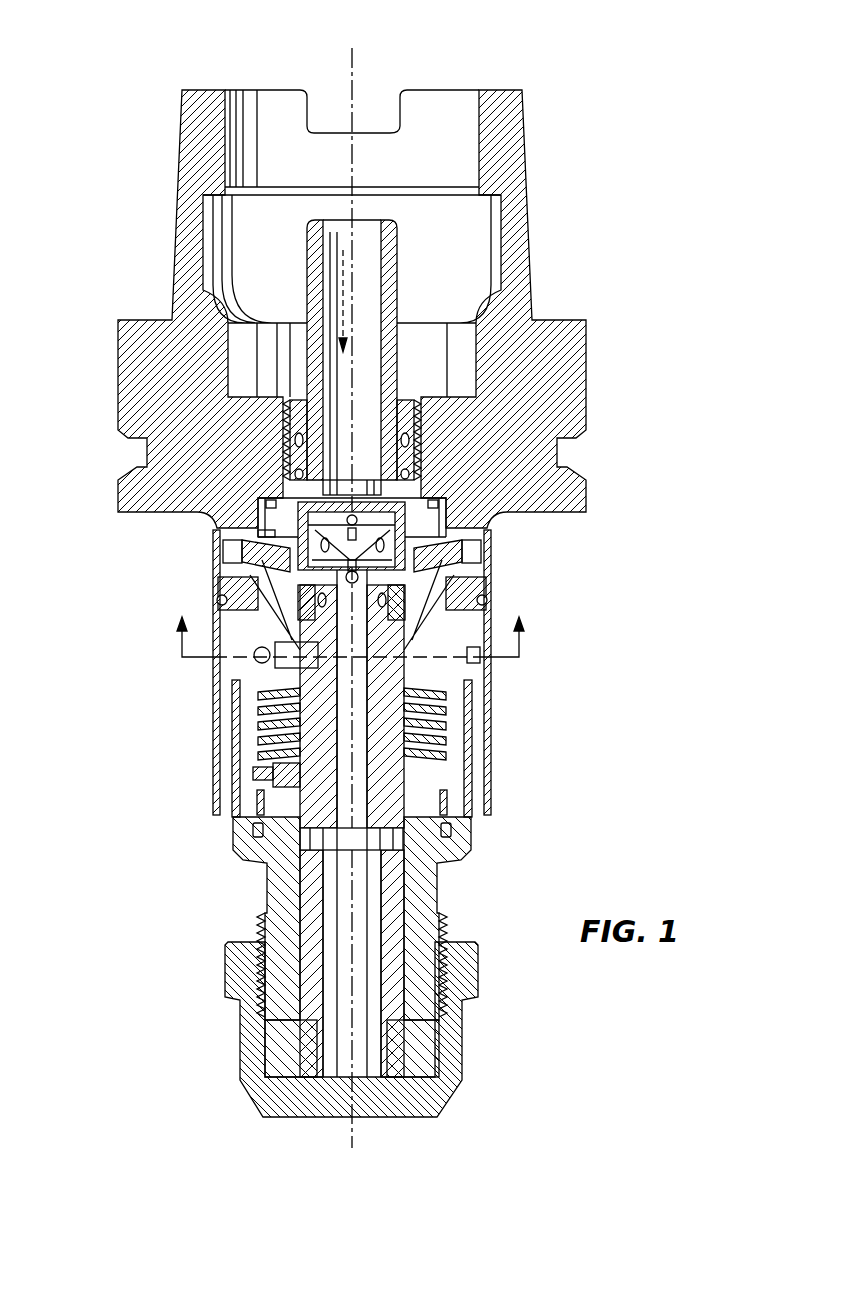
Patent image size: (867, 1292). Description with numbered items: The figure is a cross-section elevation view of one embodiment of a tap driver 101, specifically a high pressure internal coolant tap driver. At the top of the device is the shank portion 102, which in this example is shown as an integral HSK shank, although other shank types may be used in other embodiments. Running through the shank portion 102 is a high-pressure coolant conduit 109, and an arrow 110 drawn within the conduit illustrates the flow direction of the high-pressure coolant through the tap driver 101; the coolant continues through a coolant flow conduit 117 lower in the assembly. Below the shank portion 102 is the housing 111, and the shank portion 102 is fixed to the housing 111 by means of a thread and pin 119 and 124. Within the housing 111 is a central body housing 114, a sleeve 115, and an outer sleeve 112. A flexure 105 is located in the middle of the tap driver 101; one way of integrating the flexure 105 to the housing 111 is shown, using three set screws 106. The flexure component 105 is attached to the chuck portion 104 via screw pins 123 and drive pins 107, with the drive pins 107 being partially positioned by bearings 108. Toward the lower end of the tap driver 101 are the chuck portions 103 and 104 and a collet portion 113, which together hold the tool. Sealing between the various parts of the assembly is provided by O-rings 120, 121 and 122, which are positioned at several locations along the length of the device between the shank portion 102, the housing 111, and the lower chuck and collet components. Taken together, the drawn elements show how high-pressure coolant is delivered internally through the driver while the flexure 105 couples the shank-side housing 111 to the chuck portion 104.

The tap driver 101 is at (366, 578).
The shank portion 102 is at (567, 377).
The chuck portion 103 is at (433, 1085).
The chuck portion 104 is at (262, 762).
The flexure 105 is at (258, 730).
The set screws 106 is at (491, 683).
The drive pins 107 is at (243, 545).
The bearings 108 is at (257, 578).
The high-pressure coolant conduit 109 is at (392, 313).
The arrow 110 is at (343, 303).
The housing 111 is at (243, 853).
The outer sleeve 112 is at (213, 678).
The collet portion 113 is at (302, 1057).
The central body housing 114 is at (464, 757).
The sleeve 115 is at (482, 552).
The coolant flow conduit 117 is at (447, 800).
The thread and pin 119 is at (447, 529).
The O-ring 120 is at (278, 502).
The O-ring 121 is at (218, 602).
The O-ring 122 is at (253, 832).
The screw pins 123 is at (277, 787).
The thread and pin 124 is at (228, 533).